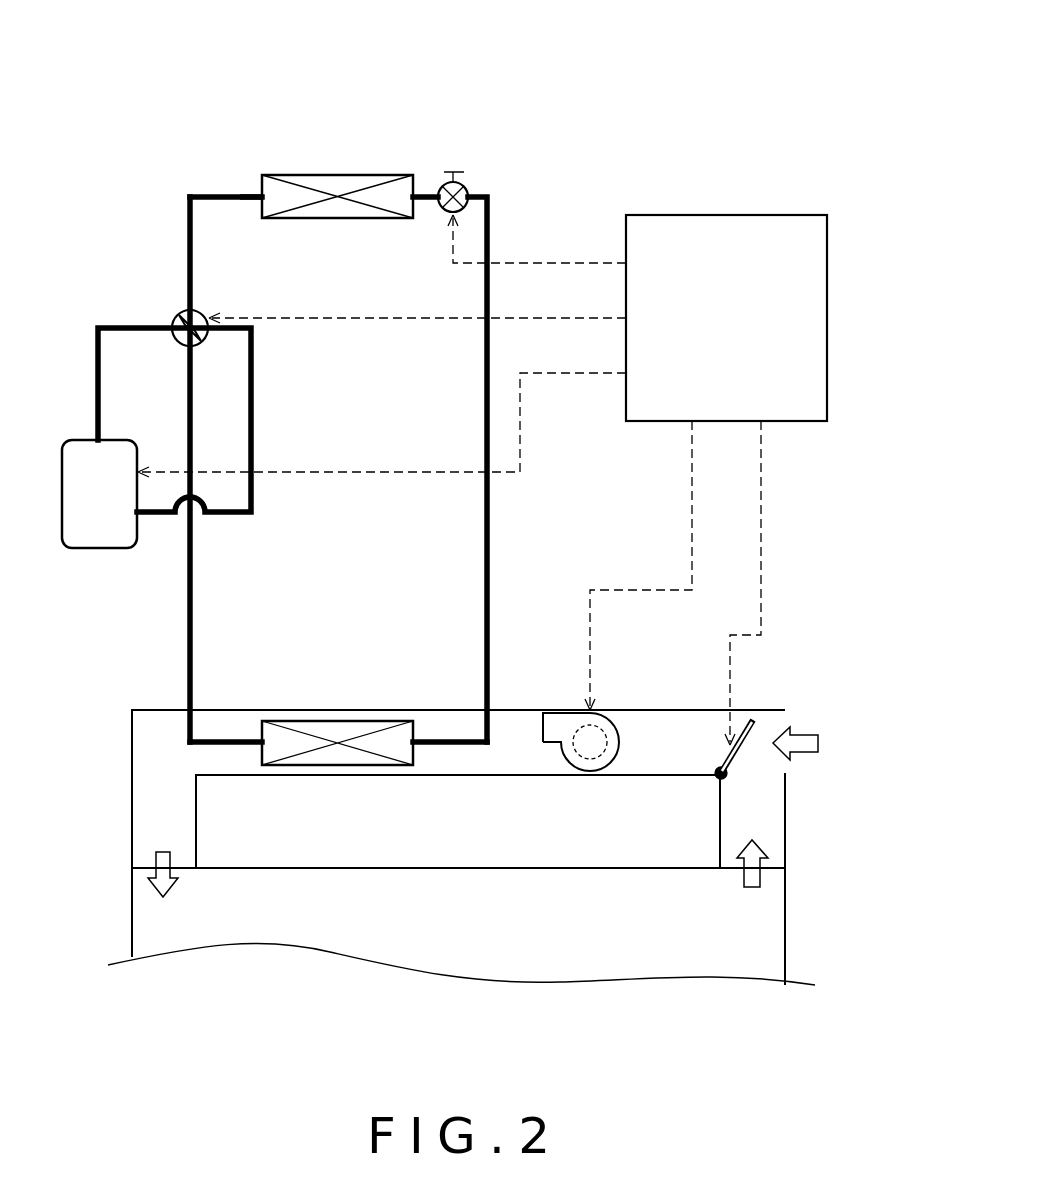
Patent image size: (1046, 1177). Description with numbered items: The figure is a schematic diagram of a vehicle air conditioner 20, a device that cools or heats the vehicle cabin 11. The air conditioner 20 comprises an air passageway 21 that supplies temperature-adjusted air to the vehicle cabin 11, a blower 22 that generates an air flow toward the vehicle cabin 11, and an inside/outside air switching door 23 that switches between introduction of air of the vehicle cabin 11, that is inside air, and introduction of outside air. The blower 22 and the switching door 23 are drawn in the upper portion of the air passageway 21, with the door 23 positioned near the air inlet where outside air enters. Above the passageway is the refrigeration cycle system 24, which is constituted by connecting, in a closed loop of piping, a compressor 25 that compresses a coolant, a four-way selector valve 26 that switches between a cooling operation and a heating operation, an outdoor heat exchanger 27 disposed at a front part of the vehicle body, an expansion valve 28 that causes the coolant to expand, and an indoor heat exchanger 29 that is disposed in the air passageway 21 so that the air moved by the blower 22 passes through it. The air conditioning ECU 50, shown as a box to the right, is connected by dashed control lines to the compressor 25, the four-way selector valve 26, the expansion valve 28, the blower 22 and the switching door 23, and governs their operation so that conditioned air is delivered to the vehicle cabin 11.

The vehicle air conditioner 20 is at (686, 75).
The air passageway 21 is at (146, 800).
The blower 22 is at (592, 767).
The inside/outside air switching door 23 is at (742, 748).
The refrigeration cycle system 24 is at (504, 165).
The compressor 25 is at (80, 440).
The four-way selector valve 26 is at (178, 313).
The outdoor heat exchanger 27 is at (336, 175).
The expansion valve 28 is at (456, 172).
The indoor heat exchanger 29 is at (336, 721).
The air conditioning ECU 50 is at (730, 215).
The vehicle cabin 11 is at (474, 936).